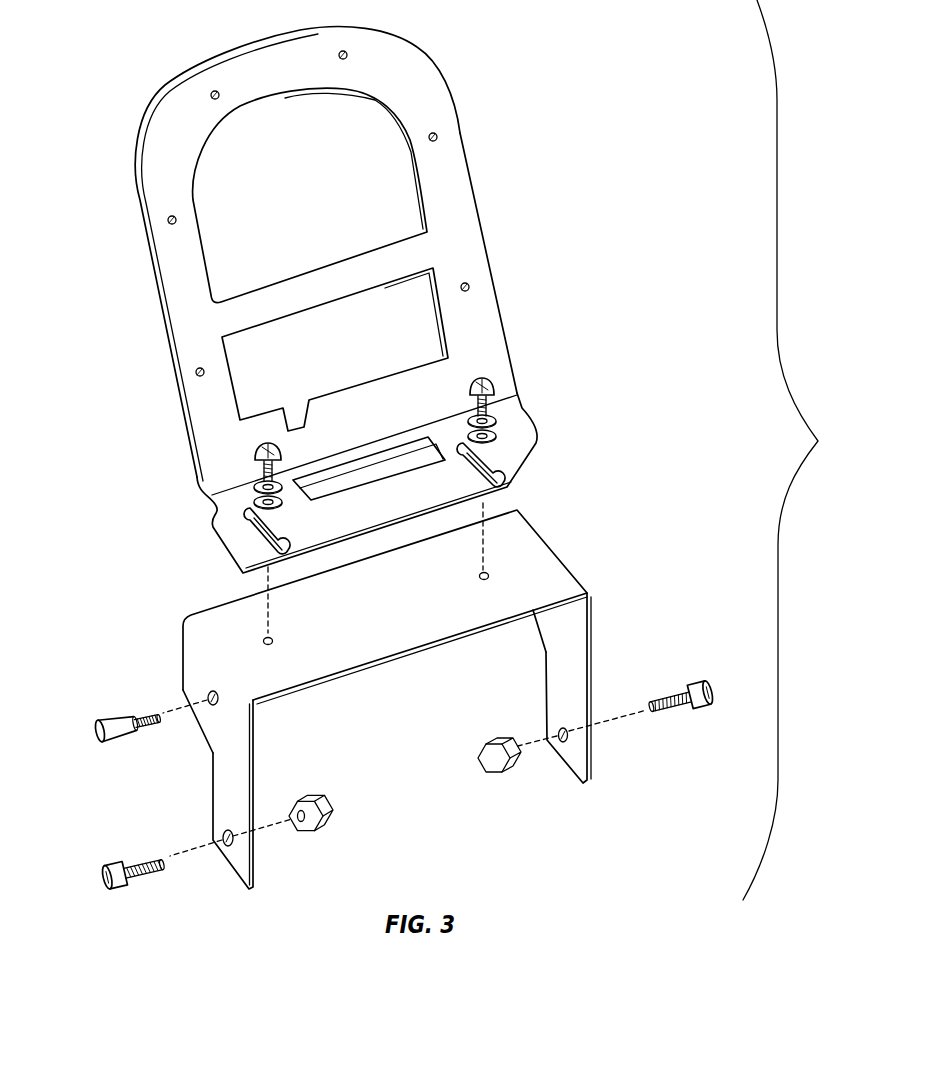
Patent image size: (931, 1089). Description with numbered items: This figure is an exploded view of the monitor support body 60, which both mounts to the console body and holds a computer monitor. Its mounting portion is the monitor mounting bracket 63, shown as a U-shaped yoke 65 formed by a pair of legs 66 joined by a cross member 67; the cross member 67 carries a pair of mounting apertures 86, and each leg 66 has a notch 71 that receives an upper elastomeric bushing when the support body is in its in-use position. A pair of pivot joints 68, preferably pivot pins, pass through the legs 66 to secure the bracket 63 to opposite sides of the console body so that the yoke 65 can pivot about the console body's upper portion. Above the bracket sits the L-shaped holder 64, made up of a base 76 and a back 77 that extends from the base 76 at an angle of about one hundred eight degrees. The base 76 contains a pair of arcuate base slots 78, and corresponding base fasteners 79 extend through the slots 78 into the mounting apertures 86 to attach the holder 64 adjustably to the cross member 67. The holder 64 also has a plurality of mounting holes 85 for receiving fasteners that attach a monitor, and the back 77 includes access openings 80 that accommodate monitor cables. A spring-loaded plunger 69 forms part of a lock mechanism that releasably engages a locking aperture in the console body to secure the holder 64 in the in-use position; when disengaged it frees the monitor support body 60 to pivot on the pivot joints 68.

The monitor support body 60 is at (797, 450).
The monitor mounting bracket 63 is at (354, 696).
The L-shaped holder 64 is at (158, 300).
The U-shaped yoke 65 is at (557, 553).
The legs 66 is at (220, 805).
The cross member 67 is at (233, 604).
The pivot joints 68 is at (108, 899).
The spring-loaded plunger 69 is at (100, 731).
The notch 71 is at (210, 753).
The base 76 is at (524, 427).
The back 77 is at (460, 207).
The arcuate base slots 78 is at (253, 523).
The base fasteners 79 is at (253, 456).
The access openings 80 is at (409, 169).
The mounting holes 85 is at (341, 51).
The mounting apertures 86 is at (480, 577).